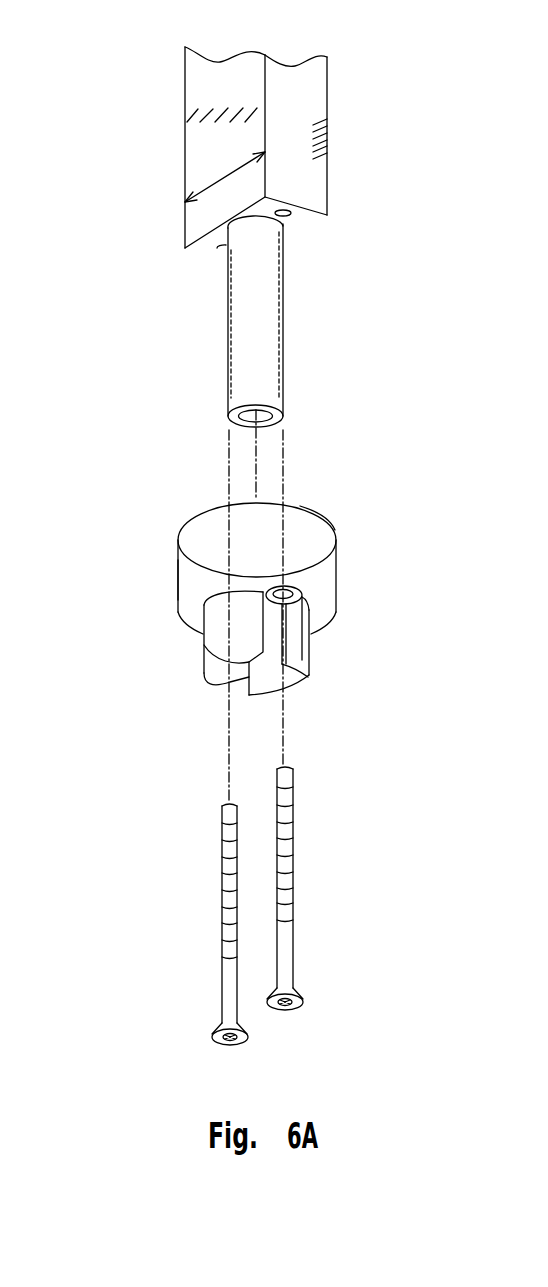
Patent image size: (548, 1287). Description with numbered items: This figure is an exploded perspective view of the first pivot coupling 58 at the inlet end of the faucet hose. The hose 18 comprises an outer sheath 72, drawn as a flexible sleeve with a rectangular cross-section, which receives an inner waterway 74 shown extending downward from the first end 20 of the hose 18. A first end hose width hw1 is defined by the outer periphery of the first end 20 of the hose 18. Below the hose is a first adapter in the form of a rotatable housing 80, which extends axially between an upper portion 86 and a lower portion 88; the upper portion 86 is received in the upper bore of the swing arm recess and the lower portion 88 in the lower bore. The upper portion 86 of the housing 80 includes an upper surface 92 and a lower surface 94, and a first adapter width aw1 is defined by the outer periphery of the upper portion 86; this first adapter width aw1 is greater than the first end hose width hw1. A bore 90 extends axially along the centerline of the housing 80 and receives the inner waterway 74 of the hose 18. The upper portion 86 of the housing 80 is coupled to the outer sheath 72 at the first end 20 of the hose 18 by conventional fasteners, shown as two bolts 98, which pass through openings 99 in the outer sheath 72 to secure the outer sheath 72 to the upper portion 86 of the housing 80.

The hose 18 is at (178, 86).
The outer sheath 72 is at (305, 86).
The first end 20 is at (343, 181).
The first end hose width hw1 is at (185, 203).
The first pivot coupling 58 is at (107, 356).
The openings 99 is at (283, 217).
The inner waterway 74 is at (267, 335).
The housing 80 is at (337, 560).
The upper surface 92 is at (310, 512).
The upper portion 86 is at (190, 548).
The first adapter width aw1 is at (130, 582).
The lower portion 88 is at (212, 644).
The bore 90 is at (248, 684).
The lower surface 94 is at (297, 683).
The bolts 98 is at (283, 912).